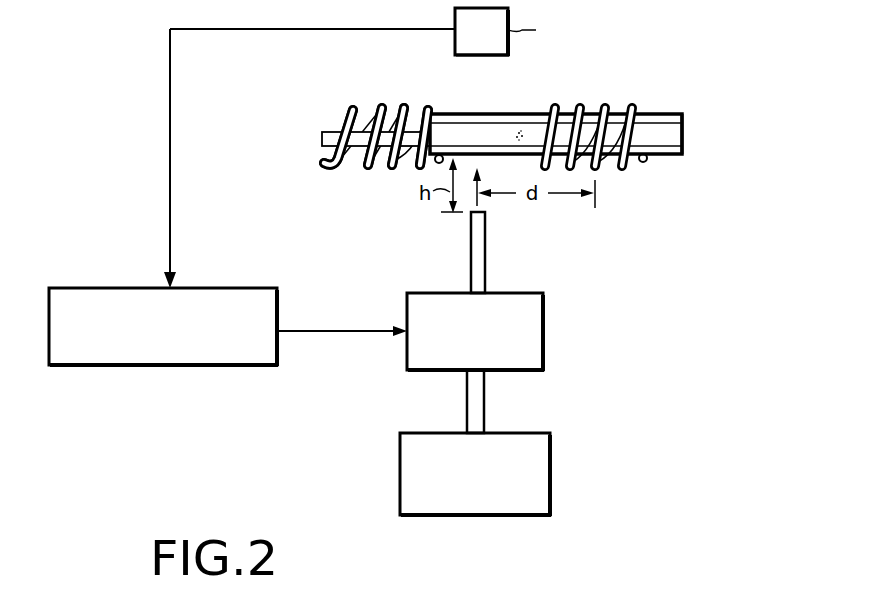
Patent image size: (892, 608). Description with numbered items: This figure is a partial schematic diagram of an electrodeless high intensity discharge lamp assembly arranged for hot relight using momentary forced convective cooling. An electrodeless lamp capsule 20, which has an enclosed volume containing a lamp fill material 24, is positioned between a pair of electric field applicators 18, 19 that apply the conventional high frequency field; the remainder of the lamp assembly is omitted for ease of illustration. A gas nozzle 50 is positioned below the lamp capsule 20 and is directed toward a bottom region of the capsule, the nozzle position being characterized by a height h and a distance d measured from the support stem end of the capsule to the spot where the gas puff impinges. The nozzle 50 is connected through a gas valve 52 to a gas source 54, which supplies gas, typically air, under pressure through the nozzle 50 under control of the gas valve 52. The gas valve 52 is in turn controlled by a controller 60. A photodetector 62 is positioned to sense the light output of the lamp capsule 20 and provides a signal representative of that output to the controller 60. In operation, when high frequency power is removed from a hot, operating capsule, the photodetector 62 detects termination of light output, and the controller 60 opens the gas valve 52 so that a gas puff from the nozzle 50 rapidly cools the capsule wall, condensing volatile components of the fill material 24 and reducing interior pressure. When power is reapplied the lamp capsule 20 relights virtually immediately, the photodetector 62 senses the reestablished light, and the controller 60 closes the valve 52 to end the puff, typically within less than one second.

The electric field applicator 18 is at (395, 98).
The electric field applicator 19 is at (601, 108).
The lamp capsule 20 is at (455, 113).
The lamp fill material 24 is at (520, 130).
The gas nozzle 50 is at (470, 248).
The gas valve 52 is at (518, 293).
The gas source 54 is at (523, 433).
The controller 60 is at (248, 288).
The photodetector 62 is at (494, 48).